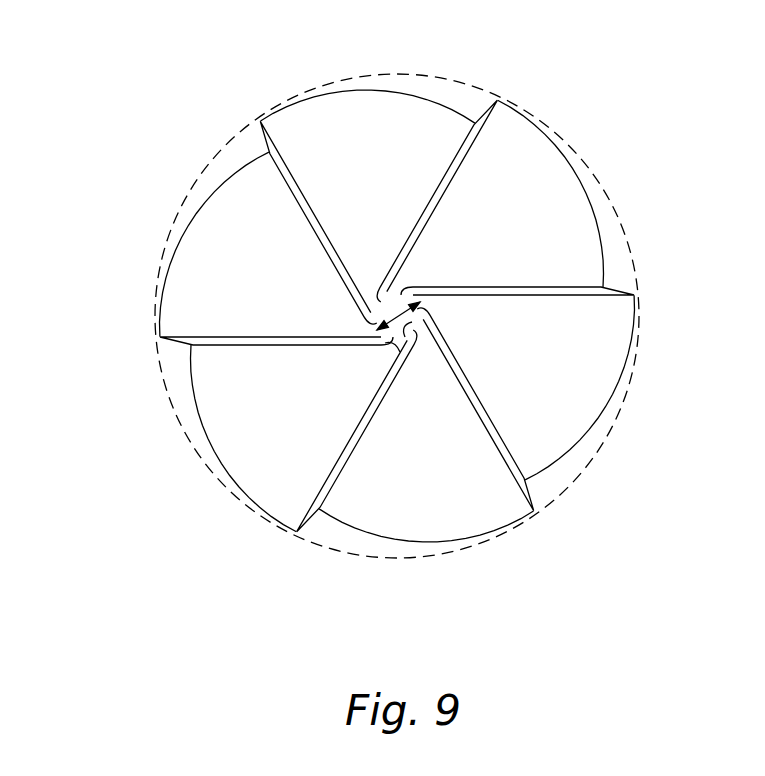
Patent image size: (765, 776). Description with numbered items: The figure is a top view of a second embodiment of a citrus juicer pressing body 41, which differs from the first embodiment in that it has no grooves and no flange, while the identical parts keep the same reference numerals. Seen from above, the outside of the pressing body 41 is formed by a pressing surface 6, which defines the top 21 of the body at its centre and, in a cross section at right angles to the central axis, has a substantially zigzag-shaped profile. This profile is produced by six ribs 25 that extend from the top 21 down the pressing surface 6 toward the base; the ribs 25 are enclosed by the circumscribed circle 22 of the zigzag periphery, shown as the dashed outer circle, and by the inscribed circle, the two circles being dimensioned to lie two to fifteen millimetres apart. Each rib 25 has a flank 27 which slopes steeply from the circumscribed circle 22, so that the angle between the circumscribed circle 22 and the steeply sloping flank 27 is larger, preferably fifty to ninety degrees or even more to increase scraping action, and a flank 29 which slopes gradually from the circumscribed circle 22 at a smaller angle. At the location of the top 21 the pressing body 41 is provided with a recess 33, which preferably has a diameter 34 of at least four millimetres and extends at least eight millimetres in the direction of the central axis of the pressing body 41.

The pressing body 41 is at (128, 110).
The circumscribed circle 22 is at (172, 397).
The rib 25 is at (227, 260).
The pressing surface 6 is at (568, 452).
The gradually sloping flank 29 is at (417, 284).
The steeply sloping flank 27 is at (285, 180).
The top 21 is at (392, 310).
The recess 33 is at (392, 341).
The diameter 34 is at (405, 337).